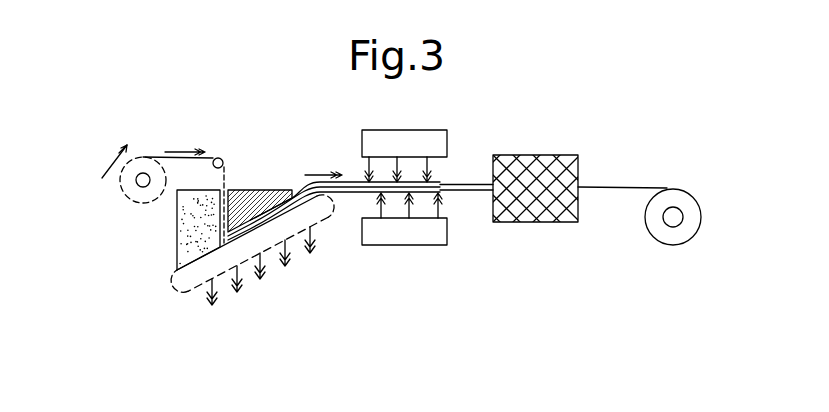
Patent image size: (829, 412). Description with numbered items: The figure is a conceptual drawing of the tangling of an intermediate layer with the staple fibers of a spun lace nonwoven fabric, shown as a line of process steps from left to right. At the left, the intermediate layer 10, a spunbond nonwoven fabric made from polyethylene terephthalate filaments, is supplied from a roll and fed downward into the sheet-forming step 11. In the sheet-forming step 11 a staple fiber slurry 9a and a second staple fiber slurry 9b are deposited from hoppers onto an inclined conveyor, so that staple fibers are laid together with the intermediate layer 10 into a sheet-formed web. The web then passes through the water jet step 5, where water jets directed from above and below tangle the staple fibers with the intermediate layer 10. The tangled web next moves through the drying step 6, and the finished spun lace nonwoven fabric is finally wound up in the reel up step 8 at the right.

The intermediate layer 10 is at (127, 192).
The staple fiber slurry 9a is at (178, 233).
The staple fiber slurry 9b is at (258, 197).
The sheet-forming step 11 is at (296, 247).
The water jet step 5 is at (352, 308).
The drying step 6 is at (622, 308).
The reel up step 8 is at (710, 308).